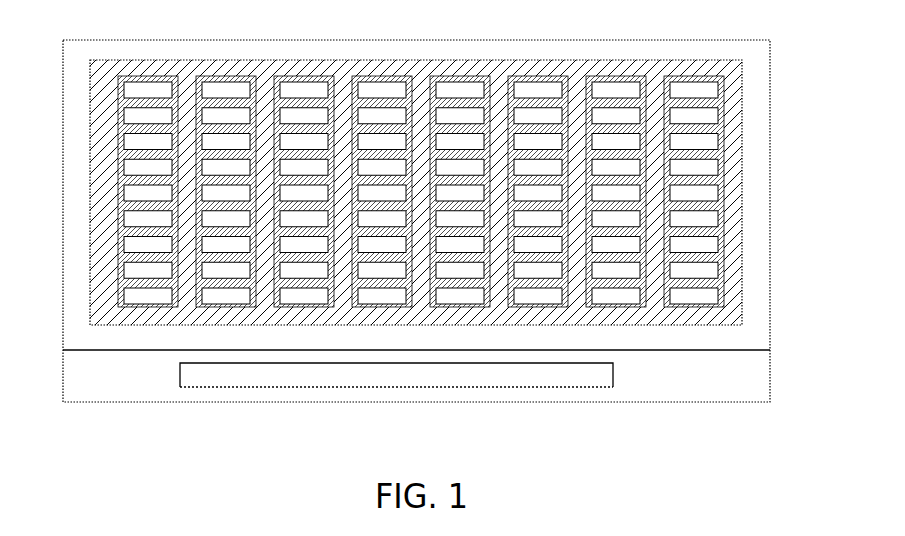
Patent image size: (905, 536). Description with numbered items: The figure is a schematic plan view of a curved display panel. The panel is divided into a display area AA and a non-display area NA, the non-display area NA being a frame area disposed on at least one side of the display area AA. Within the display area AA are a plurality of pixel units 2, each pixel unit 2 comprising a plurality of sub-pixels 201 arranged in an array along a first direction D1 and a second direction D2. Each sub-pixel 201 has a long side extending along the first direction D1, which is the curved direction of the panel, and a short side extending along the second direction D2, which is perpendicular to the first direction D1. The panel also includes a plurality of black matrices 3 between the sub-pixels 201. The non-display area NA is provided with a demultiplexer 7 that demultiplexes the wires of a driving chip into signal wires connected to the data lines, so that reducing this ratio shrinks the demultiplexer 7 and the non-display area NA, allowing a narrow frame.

The pixel unit 2 is at (116, 77).
The sub-pixel 201 is at (157, 87).
The black matrix 3 is at (718, 112).
The demultiplexer 7 is at (530, 373).
The display area AA is at (732, 222).
The non-display area NA is at (743, 377).
The first direction D1 is at (20, 19).
The second direction D2 is at (20, 19).